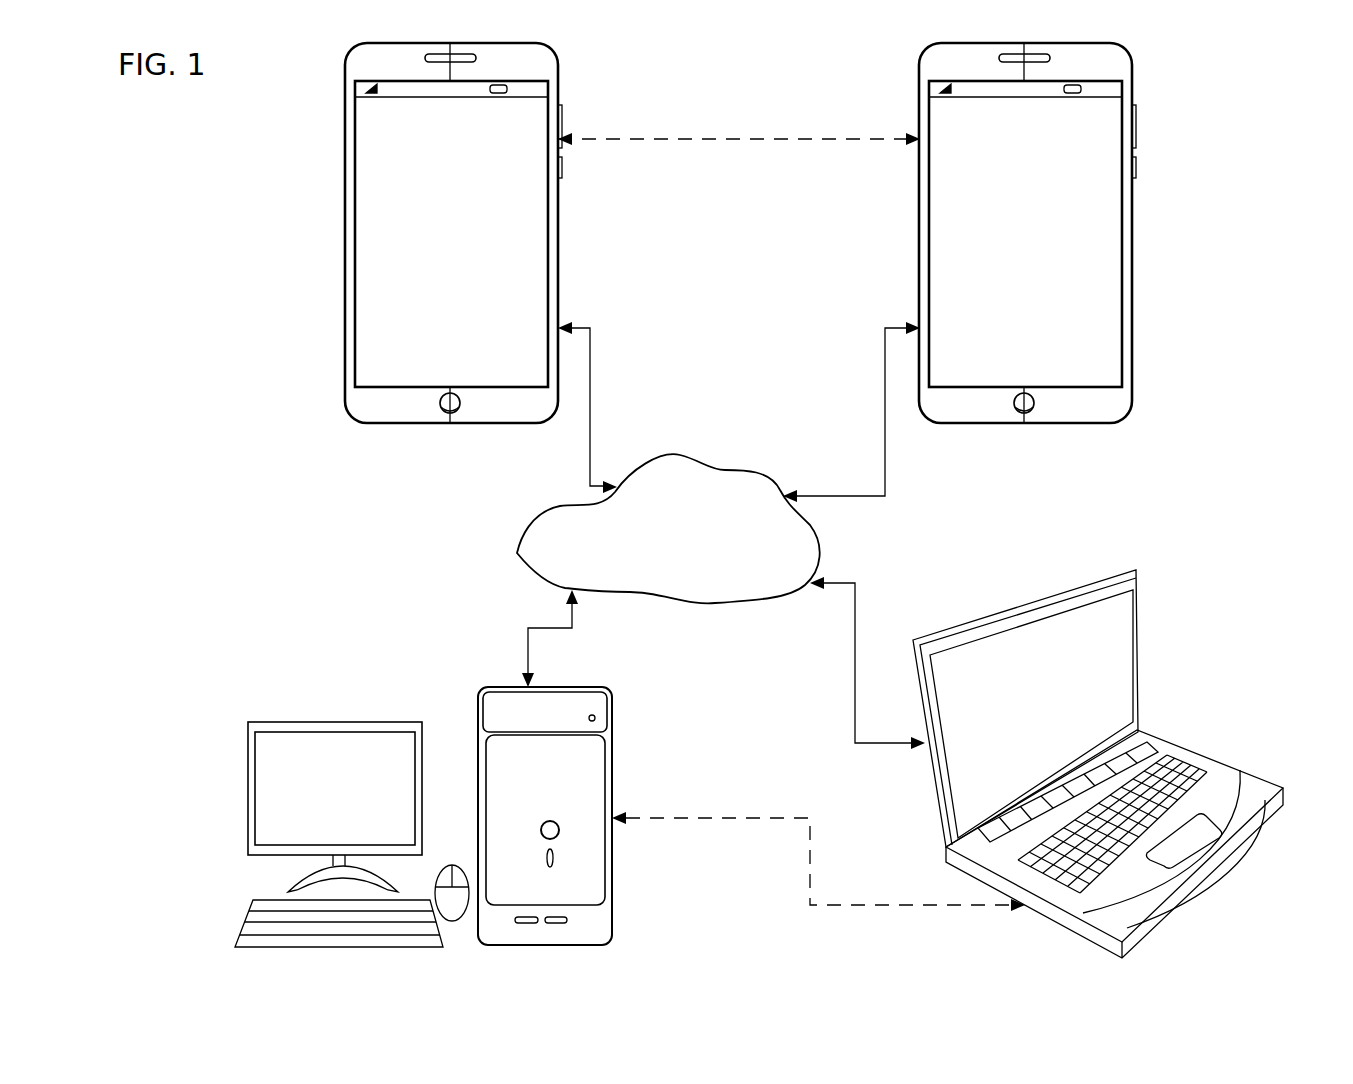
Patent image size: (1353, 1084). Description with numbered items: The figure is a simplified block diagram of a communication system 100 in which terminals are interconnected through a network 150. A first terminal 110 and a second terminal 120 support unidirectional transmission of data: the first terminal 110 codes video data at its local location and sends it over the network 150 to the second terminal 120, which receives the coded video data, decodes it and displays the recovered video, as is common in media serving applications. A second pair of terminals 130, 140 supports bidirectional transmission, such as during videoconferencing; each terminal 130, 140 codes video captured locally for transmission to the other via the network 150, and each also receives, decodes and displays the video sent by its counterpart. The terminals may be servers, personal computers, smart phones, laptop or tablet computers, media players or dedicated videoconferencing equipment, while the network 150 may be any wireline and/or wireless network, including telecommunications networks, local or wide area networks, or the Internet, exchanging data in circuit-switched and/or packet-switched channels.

The communication system 100 is at (625, 501).
The first terminal 110 is at (1138, 628).
The second terminal 120 is at (612, 908).
The terminal 130 is at (417, 233).
The terminal 140 is at (920, 169).
The network 150 is at (668, 528).